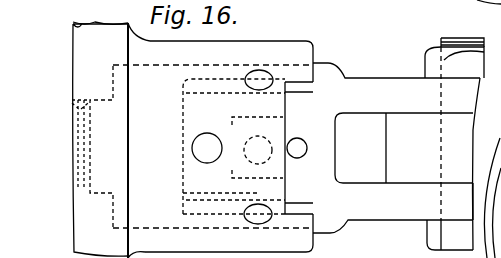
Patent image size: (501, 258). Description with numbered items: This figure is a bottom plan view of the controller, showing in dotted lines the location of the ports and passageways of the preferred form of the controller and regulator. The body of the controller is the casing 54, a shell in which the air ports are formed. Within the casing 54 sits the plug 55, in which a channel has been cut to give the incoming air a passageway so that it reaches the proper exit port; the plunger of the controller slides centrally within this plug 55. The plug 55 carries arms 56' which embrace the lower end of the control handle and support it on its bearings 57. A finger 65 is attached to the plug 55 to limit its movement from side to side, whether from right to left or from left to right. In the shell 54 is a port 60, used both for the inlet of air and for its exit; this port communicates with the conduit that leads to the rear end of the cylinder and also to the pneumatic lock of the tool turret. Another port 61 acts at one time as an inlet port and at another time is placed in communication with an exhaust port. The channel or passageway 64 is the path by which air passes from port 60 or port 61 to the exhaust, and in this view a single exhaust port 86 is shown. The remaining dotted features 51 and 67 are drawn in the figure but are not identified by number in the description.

The clamp cap 51 is at (402, 117).
The casing 54 is at (300, 50).
The plug 55 is at (323, 68).
The arms 56' is at (404, 149).
The bearings 57 is at (441, 158).
The port 60 is at (262, 73).
The port 61 is at (255, 222).
The channel or passageway 64 is at (172, 185).
The finger 65 is at (302, 140).
The hidden bore 67 is at (254, 106).
The single exhaust port 86 is at (205, 133).